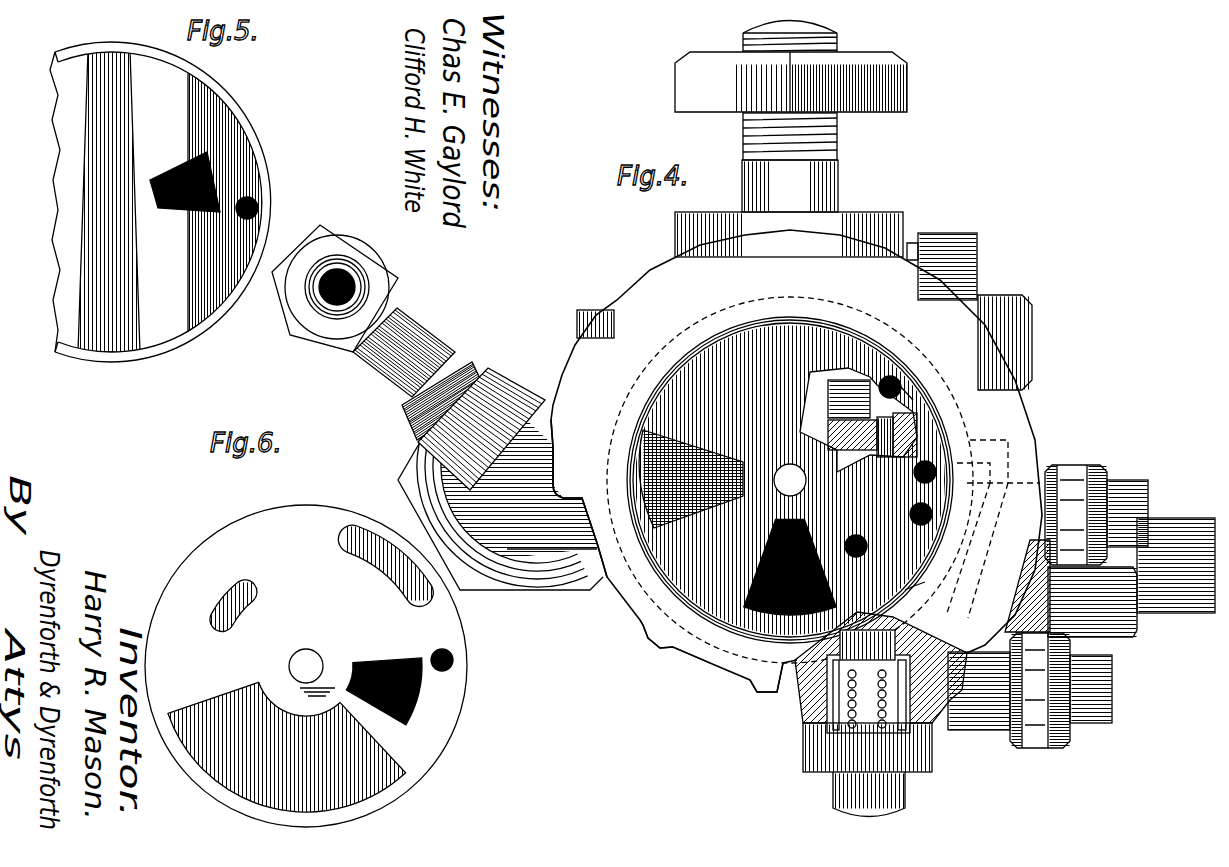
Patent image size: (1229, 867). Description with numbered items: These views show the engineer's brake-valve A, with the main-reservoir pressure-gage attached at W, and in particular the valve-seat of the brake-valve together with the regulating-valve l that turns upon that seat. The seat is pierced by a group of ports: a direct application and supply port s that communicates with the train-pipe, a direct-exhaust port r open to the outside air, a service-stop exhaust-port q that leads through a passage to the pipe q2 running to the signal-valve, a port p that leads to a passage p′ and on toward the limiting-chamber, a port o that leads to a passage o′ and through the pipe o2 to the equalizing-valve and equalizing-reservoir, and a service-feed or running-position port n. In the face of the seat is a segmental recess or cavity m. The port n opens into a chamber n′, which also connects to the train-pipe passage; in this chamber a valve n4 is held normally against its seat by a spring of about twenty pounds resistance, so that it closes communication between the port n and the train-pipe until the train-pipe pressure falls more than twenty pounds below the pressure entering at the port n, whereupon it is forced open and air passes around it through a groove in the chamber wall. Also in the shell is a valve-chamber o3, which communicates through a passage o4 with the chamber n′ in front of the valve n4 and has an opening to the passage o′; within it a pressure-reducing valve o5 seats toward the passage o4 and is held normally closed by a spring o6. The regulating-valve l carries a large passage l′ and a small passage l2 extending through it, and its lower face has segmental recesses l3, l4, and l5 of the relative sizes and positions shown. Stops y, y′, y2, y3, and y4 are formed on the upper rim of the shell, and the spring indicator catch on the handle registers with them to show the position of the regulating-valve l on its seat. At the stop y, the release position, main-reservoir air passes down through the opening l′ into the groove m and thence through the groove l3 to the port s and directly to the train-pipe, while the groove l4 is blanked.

In FIG. 4, the valve body assembly A is at (796, 429).
In FIG. 4, the main-reservoir pressure-gage attachment W is at (408, 357).
In FIG. 4, the stop y is at (570, 496).
In FIG. 4, the stop y′ is at (643, 630).
In FIG. 4, the stop y2 is at (670, 650).
In FIG. 4, the stop y3 is at (750, 682).
In FIG. 4, the stop y4 is at (918, 596).
In FIG. 4, the direct application and supply port s is at (660, 463).
In FIG. 4, the direct-exhaust port r is at (749, 582).
In FIG. 4, the segmental recess or cavity m is at (810, 389).
In FIG. 4, the service-feed or running-position port n is at (900, 386).
In FIG. 4, the valve n4 is at (881, 376).
In FIG. 4, the chamber n′ is at (900, 422).
In FIG. 4, the port o is at (917, 484).
In FIG. 4, the passage o′ is at (950, 687).
In FIG. 4, the pipe o2 is at (1110, 696).
In FIG. 4, the valve-chamber o3 is at (907, 722).
In FIG. 4, the passage o4 is at (885, 508).
In FIG. 4, the pressure-reducing valve o5 is at (800, 700).
In FIG. 4, the spring o6 is at (843, 723).
In FIG. 4, the port p is at (911, 516).
In FIG. 4, the passage p′ is at (1133, 510).
In FIG. 4, the service-stop exhaust-port q is at (847, 542).
In FIG. 4, the pipe q2 is at (1188, 597).
In FIG. 6, the regulating-valve l is at (252, 525).
In FIG. 5, the large passage l′ is at (217, 173).
In FIG. 6, the large passage l′ is at (418, 692).
In FIG. 5, the small passage l2 is at (258, 207).
In FIG. 6, the small passage l2 is at (452, 655).
In FIG. 6, the segmental recess l3 is at (378, 775).
In FIG. 6, the segmental recess l4 is at (245, 585).
In FIG. 6, the segmental recess l5 is at (350, 533).